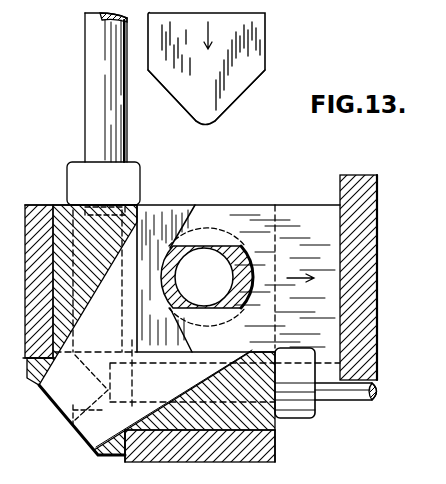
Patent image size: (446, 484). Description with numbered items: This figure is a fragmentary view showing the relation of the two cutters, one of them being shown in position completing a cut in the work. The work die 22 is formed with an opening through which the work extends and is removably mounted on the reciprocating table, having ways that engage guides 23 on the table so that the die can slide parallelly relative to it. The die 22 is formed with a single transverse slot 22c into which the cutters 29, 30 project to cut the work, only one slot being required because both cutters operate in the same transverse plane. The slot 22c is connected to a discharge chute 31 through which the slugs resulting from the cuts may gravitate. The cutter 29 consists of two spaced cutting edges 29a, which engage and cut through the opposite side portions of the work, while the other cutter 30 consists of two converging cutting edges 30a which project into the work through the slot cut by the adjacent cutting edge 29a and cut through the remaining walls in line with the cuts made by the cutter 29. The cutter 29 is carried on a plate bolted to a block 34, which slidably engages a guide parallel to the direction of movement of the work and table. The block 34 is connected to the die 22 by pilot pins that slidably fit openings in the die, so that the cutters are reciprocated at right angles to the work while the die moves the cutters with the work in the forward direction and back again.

The work die 22 is at (150, 211).
The transverse slot 22c is at (262, 360).
The guides 23 is at (40, 204).
The cutter 29 is at (297, 212).
The cutting edges 29a is at (183, 205).
The cutter 30 is at (262, 25).
The converging cutting edges 30a is at (172, 104).
The discharge chute 31 is at (80, 442).
The block 34 is at (346, 417).